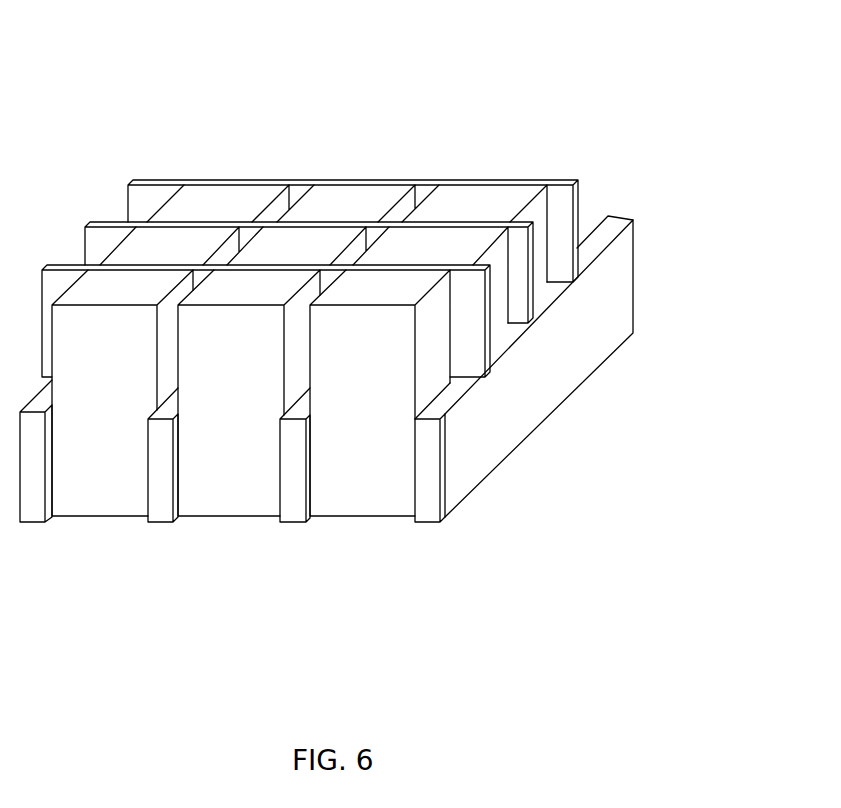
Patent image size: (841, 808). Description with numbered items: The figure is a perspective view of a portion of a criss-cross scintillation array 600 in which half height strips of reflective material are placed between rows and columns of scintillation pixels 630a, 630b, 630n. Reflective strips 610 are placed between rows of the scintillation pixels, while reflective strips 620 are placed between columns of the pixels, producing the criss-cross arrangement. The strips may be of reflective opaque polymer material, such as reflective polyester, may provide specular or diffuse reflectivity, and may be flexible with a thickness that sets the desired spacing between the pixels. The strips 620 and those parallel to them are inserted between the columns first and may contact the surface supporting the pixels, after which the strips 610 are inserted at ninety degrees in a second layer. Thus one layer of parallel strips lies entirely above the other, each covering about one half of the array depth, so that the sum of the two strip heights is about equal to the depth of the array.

The scintillation array 600 is at (367, 305).
The reflective strips 610 is at (463, 308).
The reflective strips 620 is at (513, 400).
The scintillation pixel 630a is at (390, 365).
The scintillation pixel 630b is at (452, 255).
The scintillation pixel 630n is at (499, 215).